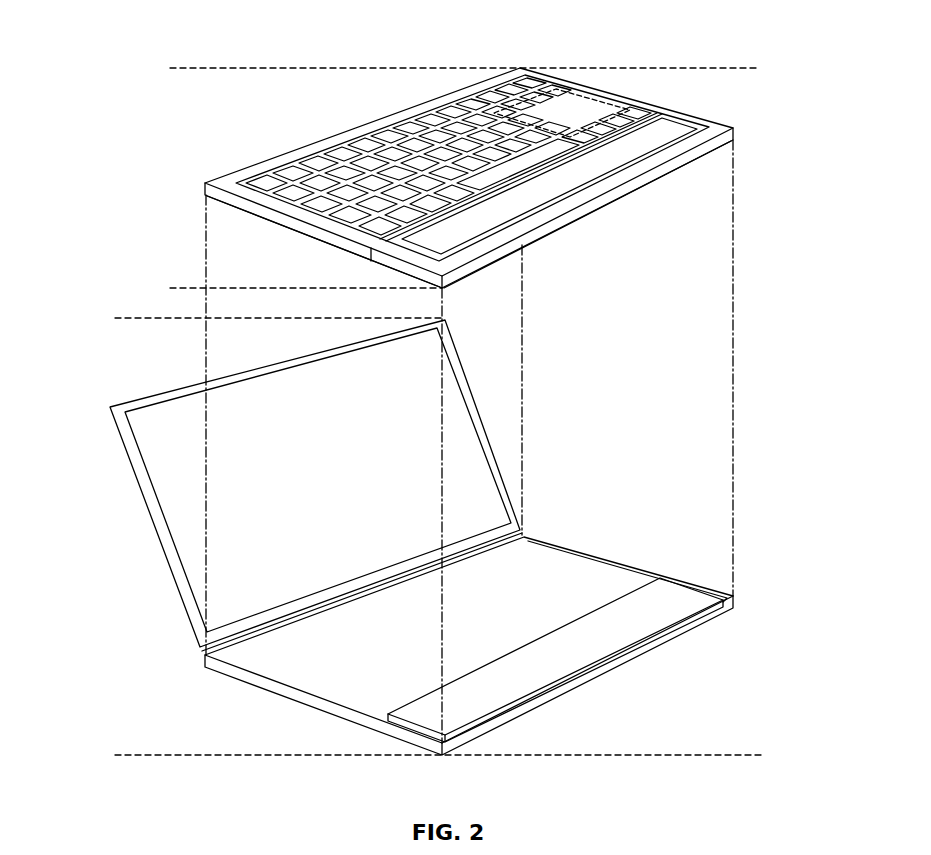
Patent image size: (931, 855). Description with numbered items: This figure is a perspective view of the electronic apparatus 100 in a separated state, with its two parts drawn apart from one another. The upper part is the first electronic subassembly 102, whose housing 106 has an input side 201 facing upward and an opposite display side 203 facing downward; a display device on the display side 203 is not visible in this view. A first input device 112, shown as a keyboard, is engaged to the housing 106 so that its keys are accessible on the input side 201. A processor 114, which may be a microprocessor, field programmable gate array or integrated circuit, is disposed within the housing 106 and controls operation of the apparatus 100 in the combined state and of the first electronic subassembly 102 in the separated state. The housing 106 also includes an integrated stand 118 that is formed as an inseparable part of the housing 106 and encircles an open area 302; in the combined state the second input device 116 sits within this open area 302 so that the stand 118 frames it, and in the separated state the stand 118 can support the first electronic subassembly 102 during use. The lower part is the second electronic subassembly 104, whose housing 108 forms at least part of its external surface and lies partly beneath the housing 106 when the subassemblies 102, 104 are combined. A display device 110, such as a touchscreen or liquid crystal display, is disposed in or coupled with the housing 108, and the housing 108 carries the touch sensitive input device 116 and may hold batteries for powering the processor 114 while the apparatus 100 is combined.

The electronic apparatus 100 is at (758, 68).
The first electronic subassembly 102 is at (466, 155).
The second electronic subassembly 104 is at (400, 536).
The housing 106 is at (357, 252).
The housing 108 is at (282, 687).
The display device 110 is at (192, 528).
The first input device 112 is at (347, 147).
The processor 114 is at (568, 116).
The input device 116 is at (524, 683).
The integrated stand 118 is at (442, 288).
The input side 201 is at (282, 138).
The display side 203 is at (290, 236).
The open area 302 is at (672, 141).